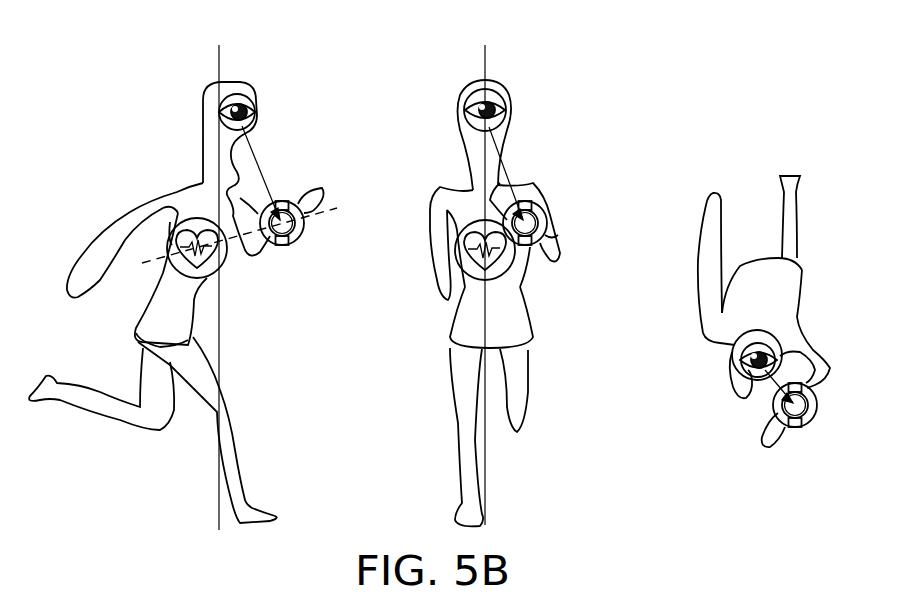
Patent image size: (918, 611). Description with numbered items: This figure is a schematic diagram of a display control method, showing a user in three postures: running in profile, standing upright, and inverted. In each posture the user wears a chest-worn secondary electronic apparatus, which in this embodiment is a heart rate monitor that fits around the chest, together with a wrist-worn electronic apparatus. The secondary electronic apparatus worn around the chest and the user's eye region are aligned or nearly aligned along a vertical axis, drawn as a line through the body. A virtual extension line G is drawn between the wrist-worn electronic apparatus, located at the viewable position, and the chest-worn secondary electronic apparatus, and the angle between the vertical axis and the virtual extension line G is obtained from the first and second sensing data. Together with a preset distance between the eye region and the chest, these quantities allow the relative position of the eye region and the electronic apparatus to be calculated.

The virtual extension line G is at (250, 231).